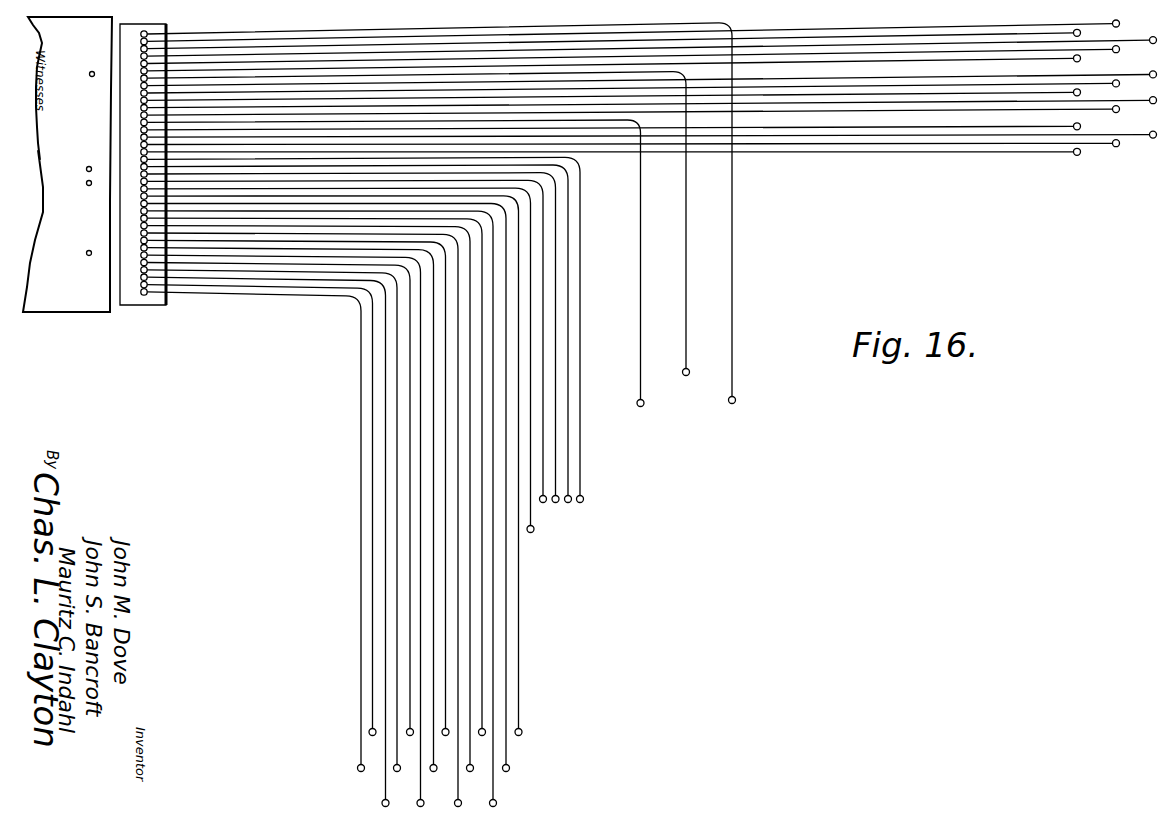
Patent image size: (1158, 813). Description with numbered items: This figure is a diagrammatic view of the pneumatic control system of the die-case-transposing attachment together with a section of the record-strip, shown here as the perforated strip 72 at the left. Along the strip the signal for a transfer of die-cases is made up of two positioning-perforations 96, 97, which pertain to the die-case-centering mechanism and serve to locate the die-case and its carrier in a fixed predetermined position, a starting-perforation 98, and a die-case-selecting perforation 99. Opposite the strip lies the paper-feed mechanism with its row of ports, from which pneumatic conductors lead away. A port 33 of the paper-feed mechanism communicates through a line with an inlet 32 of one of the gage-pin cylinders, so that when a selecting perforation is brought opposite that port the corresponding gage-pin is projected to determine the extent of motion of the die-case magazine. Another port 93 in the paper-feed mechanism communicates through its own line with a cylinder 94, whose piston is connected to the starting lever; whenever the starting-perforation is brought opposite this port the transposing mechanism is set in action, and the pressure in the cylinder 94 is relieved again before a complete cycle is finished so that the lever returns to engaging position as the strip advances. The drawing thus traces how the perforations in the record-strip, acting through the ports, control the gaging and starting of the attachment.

The tablet 72 is at (67, 164).
The positioning-perforation 96 is at (76, 75).
The die-case-selecting perforation 99 is at (72, 170).
The starting-perforation 98 is at (72, 192).
The positioning-perforation 97 is at (73, 256).
The port 33 is at (141, 174).
The port 93 is at (141, 181).
The inlet 32 is at (365, 347).
The cylinder 94 is at (351, 375).